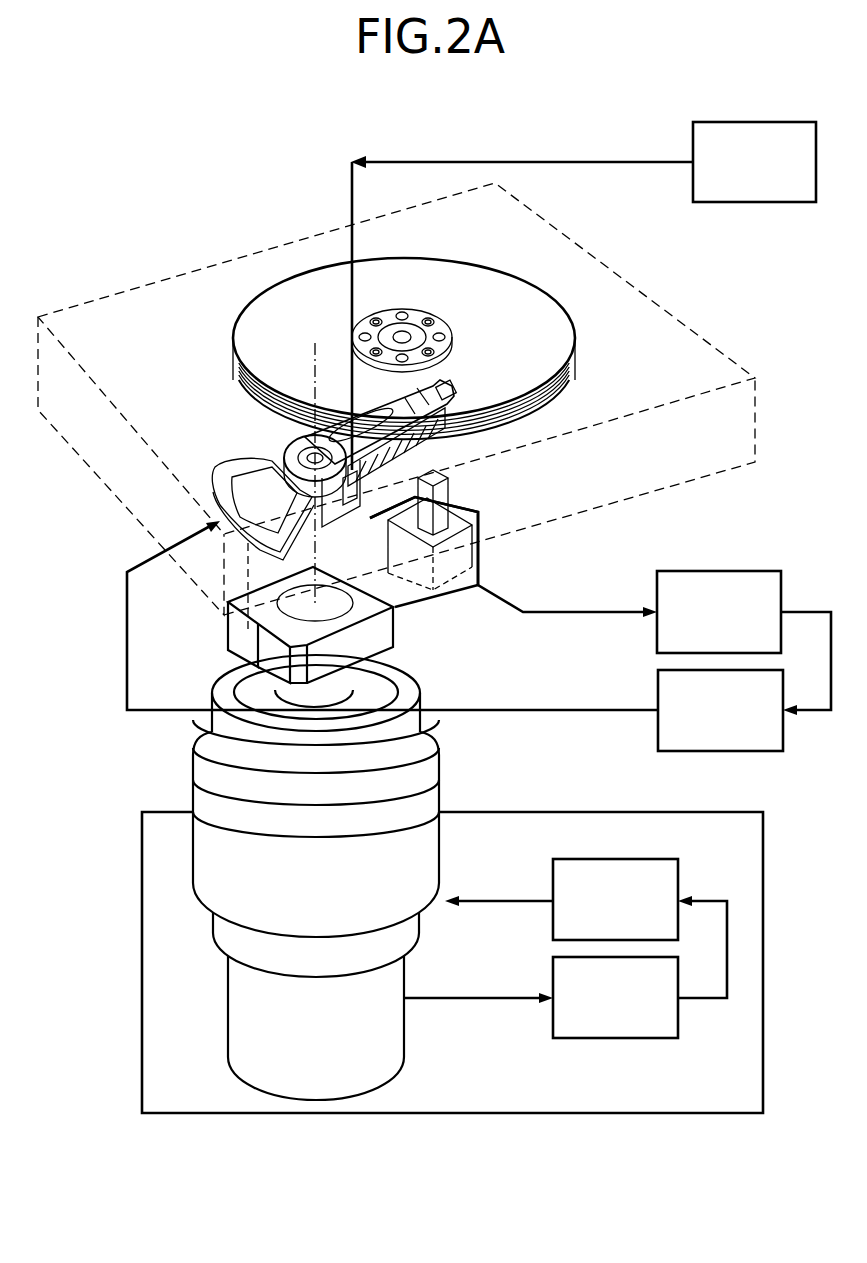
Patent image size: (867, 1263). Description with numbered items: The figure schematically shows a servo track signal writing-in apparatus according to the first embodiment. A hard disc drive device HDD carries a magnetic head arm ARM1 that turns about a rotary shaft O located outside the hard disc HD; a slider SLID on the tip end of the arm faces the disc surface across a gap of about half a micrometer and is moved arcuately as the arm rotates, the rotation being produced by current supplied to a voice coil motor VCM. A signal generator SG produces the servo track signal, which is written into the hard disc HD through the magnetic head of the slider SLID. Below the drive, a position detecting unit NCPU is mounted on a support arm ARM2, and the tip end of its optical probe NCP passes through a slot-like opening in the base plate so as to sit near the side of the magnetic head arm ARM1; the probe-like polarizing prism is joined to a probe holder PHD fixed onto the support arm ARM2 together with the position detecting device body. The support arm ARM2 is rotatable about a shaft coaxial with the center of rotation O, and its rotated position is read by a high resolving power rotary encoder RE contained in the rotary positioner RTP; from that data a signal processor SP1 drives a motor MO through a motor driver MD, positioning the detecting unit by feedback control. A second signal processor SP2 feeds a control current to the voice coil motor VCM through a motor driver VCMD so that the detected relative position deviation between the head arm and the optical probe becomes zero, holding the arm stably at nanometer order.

The hard disc drive device HDD is at (201, 262).
The hard disc HD is at (465, 283).
The rotary shaft O is at (312, 362).
The voice coil motor VCM is at (237, 466).
The slider SLID is at (452, 386).
The magnetic head arm ARM1 is at (455, 462).
The optical probe NCP is at (450, 471).
The probe holder PHD is at (480, 523).
The position detecting unit NCPU is at (482, 560).
The support arm ARM2 is at (410, 608).
The signal generator SG is at (773, 174).
The signal processor SP2 is at (743, 625).
The motor driver VCMD is at (756, 725).
The motor driver MD is at (632, 914).
The signal processor SP1 is at (640, 1011).
The rotary positioner RTP is at (452, 884).
The motor MO is at (499, 887).
The rotary encoder RE is at (479, 1014).